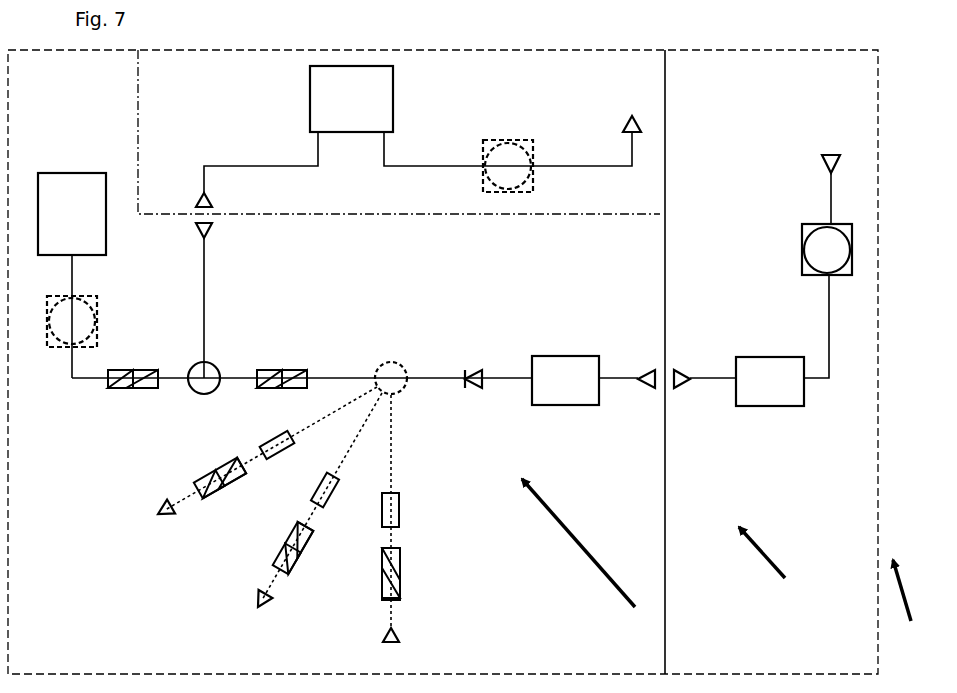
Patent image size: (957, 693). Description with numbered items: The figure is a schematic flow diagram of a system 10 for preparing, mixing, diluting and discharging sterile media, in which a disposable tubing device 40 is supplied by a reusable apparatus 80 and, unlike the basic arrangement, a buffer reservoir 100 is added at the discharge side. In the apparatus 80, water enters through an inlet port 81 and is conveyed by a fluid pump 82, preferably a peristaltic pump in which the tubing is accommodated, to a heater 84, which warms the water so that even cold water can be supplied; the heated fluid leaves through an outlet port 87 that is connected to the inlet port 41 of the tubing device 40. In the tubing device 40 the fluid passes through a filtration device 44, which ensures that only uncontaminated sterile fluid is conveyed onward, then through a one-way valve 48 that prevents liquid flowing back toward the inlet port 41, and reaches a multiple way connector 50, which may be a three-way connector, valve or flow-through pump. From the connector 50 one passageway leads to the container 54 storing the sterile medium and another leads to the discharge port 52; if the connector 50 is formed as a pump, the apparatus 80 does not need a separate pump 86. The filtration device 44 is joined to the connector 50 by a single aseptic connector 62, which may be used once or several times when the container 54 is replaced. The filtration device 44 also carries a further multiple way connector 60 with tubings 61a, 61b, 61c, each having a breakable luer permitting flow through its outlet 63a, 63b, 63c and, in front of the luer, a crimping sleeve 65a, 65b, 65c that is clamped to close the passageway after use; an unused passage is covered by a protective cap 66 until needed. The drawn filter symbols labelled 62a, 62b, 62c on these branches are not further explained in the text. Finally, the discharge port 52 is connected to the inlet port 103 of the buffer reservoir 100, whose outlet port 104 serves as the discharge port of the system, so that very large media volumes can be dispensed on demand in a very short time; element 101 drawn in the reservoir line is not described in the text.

The system 10 is at (908, 612).
The tubing device 40 is at (583, 556).
The inlet port 41 is at (645, 369).
The filtration device 44 is at (563, 376).
The one-way valve 48 is at (472, 369).
The multiple way connector 50 is at (210, 372).
The discharge port 52 is at (215, 240).
The container 54 is at (69, 194).
The multiple way connector 60 is at (388, 374).
The tubing 61a is at (318, 423).
The tubing 61b is at (358, 429).
The tubing 61c is at (395, 446).
The aseptic connector 62 is at (140, 389).
The first filter 62a is at (195, 480).
The second filter 62b is at (275, 560).
The third filter 62c is at (401, 563).
The outlet 63a is at (158, 513).
The outlet 63b is at (253, 603).
The outlet 63c is at (400, 637).
The crimping sleeve 65a is at (258, 447).
The crimping sleeve 65b is at (318, 491).
The crimping sleeve 65c is at (400, 508).
The protective cap 66 is at (90, 578).
The apparatus 80 is at (769, 568).
The inlet port 81 is at (822, 163).
The fluid pump 82 is at (818, 254).
The heater 84 is at (757, 390).
The pump 86 is at (83, 328).
The outlet port 87 is at (680, 369).
The buffer reservoir 100 is at (336, 102).
The sensor 101 is at (510, 158).
The inlet port 103 is at (213, 201).
The outlet port 104 is at (622, 122).